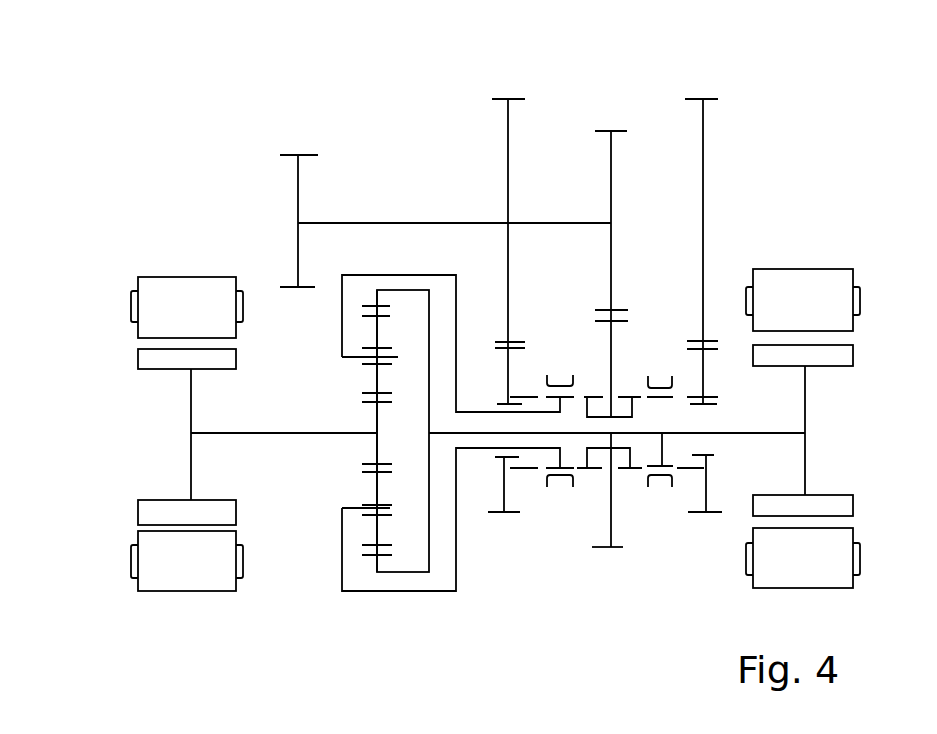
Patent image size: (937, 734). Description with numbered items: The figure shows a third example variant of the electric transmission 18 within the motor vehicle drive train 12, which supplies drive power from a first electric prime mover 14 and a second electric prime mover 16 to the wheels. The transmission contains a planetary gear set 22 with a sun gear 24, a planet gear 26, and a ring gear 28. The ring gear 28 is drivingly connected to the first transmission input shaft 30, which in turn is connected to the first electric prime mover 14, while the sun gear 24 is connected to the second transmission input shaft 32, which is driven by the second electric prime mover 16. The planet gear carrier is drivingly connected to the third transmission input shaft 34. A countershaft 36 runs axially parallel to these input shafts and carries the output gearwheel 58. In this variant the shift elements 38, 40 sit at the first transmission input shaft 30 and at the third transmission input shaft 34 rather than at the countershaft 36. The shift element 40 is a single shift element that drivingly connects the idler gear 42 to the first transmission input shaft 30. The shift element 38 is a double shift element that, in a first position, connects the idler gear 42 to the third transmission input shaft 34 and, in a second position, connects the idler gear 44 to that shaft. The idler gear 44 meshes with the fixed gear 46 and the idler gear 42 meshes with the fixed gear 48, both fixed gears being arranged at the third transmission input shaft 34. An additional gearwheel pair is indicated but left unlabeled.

The motor vehicle drive train 12 is at (69, 98).
The first electric prime mover 14 is at (819, 381).
The second electric prime mover 16 is at (141, 390).
The electric transmission 18 is at (183, 169).
The planetary gear set 22 is at (402, 486).
The sun gear 24 is at (377, 448).
The planet gear 26 is at (379, 338).
The ring gear 28 is at (377, 560).
The first transmission input shaft 30 is at (737, 433).
The second transmission input shaft 32 is at (252, 433).
The third transmission input shaft 34 is at (463, 449).
The countershaft 36 is at (587, 223).
The first shift element 38 is at (557, 487).
The second shift element 40 is at (660, 487).
The idler gear 42 is at (611, 472).
The idler gear 44 is at (504, 482).
The fixed gear 46 is at (508, 193).
The fixed gear 48 is at (611, 182).
The output gearwheel 58 is at (298, 210).